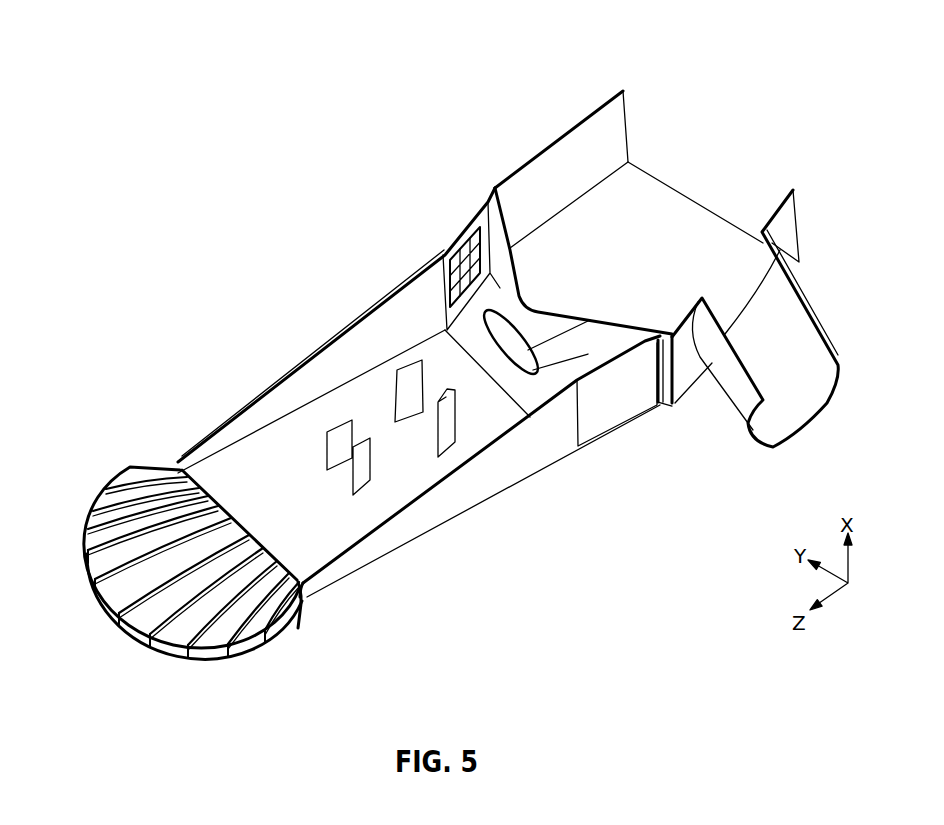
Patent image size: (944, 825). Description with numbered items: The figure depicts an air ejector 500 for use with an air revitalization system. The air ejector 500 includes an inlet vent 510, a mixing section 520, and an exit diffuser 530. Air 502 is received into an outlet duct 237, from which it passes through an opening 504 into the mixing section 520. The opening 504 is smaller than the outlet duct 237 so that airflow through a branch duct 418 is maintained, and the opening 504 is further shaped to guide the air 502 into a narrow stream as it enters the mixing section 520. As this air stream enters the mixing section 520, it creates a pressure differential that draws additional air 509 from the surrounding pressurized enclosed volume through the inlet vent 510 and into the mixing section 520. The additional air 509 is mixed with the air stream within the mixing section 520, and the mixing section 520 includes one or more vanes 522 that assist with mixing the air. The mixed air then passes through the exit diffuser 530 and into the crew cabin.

The air ejector 500 is at (122, 32).
The outlet duct 237 is at (606, 168).
The air 502 is at (658, 217).
The opening 504 is at (500, 361).
The additional air 509 is at (438, 240).
The inlet vent 510 is at (463, 237).
The mixing section 520 is at (388, 338).
The vanes 522 is at (368, 463).
The exit diffuser 530 is at (123, 482).
The branch duct 418 is at (793, 332).